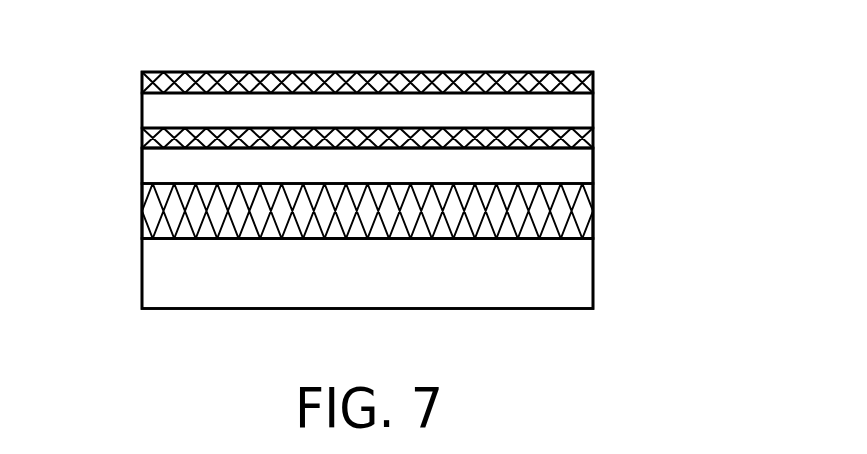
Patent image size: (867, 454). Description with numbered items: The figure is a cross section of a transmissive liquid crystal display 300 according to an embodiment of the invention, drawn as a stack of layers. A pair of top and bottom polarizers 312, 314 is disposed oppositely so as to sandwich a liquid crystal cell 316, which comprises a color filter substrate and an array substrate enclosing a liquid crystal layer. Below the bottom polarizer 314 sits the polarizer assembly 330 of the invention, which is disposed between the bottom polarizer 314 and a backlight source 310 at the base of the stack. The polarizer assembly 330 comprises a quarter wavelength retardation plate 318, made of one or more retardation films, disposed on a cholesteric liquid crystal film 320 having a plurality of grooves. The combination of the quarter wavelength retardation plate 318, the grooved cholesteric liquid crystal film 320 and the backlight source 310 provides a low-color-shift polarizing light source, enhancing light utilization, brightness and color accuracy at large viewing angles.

The liquid crystal display 300 is at (610, 62).
The backlight source 310 is at (593, 272).
The top polarizer 312 is at (593, 80).
The bottom polarizer 314 is at (593, 137).
The liquid crystal cell 316 is at (593, 108).
The quarter wavelength retardation plate 318 is at (593, 167).
The cholesteric liquid crystal film 320 is at (593, 213).
The polarizer assembly 330 is at (122, 147).